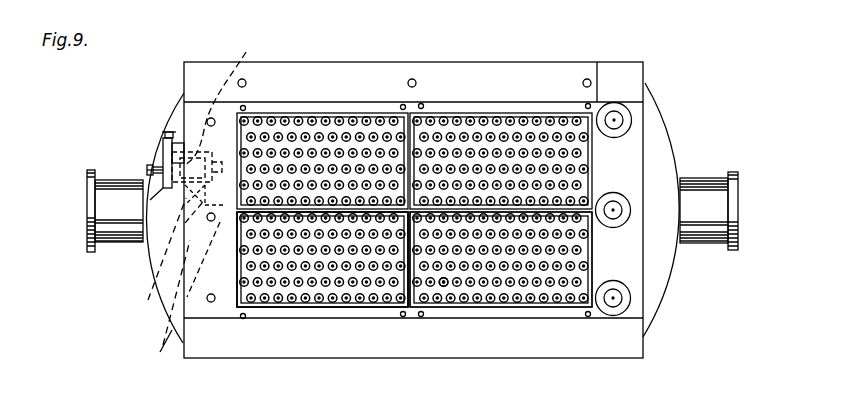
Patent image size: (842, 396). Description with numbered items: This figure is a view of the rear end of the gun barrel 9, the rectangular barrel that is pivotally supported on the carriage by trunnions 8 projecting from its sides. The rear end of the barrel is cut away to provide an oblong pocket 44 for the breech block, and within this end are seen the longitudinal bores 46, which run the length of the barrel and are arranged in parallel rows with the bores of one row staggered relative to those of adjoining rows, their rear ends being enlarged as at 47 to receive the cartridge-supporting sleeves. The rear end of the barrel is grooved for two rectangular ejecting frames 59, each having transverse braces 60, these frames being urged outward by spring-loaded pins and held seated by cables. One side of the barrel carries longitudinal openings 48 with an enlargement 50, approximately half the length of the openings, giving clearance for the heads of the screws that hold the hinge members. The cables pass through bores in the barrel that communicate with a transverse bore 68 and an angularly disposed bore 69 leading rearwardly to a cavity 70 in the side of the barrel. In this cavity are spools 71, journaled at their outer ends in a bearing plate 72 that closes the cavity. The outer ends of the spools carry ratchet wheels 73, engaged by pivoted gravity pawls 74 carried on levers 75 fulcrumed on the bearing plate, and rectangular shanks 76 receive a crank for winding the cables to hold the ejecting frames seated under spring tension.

The trunnions 8 is at (110, 205).
The gun barrel 9 is at (551, 61).
The oblong pocket 44 is at (644, 108).
The longitudinal bores 46 is at (384, 302).
The enlarged rear ends of the bores 47 is at (362, 303).
The longitudinal openings 48 is at (622, 121).
The enlargement of the openings 50 is at (628, 134).
The ejecting frames 59 is at (338, 113).
The transverse braces 60 is at (303, 213).
The transverse bore 68 is at (157, 354).
The angularly disposed bore 69 is at (162, 292).
The cavity 70 is at (141, 253).
The spools 71 is at (222, 163).
The bearing plate 72 is at (178, 200).
The ratchet wheels 73 is at (164, 158).
The gravity pawls 74 is at (176, 205).
The levers 75 is at (169, 132).
The rectangular shanks 76 is at (148, 170).